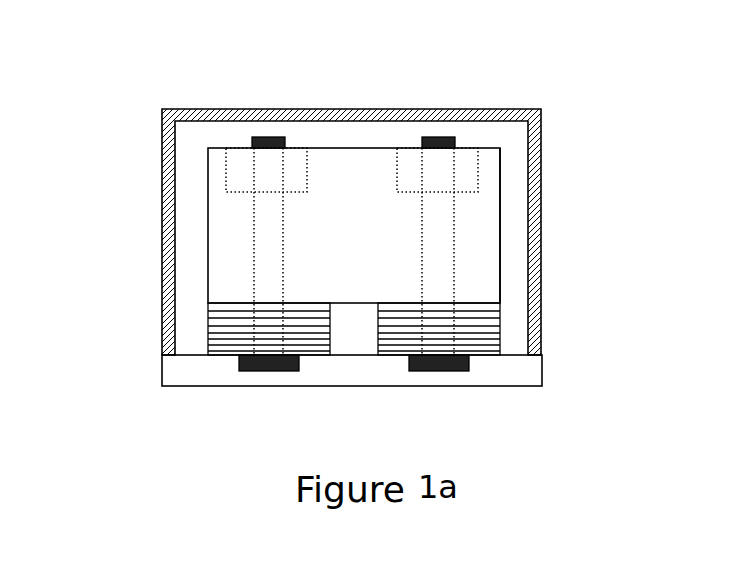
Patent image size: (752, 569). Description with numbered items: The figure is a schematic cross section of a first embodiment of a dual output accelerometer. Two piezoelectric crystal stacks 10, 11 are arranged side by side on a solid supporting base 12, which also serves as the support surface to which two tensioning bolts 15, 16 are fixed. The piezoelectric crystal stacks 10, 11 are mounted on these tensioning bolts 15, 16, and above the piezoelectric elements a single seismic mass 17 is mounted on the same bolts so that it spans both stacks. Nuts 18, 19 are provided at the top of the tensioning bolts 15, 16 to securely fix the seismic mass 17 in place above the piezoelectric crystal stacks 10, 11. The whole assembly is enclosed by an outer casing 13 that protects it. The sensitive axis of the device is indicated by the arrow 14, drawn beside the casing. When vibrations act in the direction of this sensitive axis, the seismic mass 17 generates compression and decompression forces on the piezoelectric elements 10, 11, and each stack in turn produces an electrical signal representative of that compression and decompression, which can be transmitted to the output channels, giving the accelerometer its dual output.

The piezoelectric crystal stack 10 is at (203, 328).
The piezoelectric crystal stack 11 is at (502, 332).
The solid supporting base 12 is at (513, 378).
The outer casing 13 is at (410, 105).
The arrow indicating sensitive axis 14 is at (128, 188).
The tensioning bolt 15 is at (257, 260).
The tensioning bolt 16 is at (450, 290).
The seismic mass 17 is at (500, 205).
The nut 18 is at (249, 170).
The nut 19 is at (462, 150).